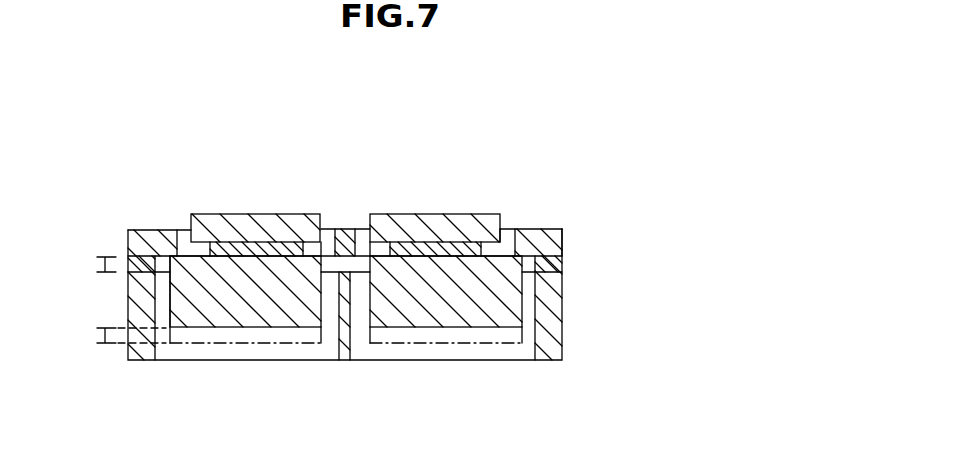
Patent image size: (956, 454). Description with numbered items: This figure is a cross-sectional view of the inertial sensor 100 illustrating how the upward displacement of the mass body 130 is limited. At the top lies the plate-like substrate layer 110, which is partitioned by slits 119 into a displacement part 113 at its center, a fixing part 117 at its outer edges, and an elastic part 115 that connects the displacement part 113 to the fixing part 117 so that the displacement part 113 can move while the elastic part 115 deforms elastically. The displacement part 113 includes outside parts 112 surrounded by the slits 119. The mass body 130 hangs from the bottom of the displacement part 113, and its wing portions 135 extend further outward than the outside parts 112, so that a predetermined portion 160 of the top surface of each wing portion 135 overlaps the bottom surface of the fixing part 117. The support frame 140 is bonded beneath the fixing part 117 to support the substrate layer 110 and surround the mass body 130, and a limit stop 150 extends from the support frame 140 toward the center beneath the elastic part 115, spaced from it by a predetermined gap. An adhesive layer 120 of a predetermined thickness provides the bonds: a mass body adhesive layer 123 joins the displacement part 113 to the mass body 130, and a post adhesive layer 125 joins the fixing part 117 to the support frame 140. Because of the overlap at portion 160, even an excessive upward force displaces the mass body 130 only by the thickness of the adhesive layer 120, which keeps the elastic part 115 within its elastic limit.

The inertial sensor 100 is at (293, 117).
The substrate layer 110 is at (570, 238).
The outside part 112 is at (443, 197).
The displacement part 113 is at (477, 226).
The elastic part 115 is at (351, 241).
The fixing part 117 is at (543, 243).
The slit 119 is at (185, 226).
The adhesive layer 120 is at (572, 263).
The mass body adhesive layer 123 is at (413, 241).
The post adhesive layer 125 is at (557, 263).
The mass body 130 is at (460, 307).
The wing portion 135 is at (346, 352).
The support frame 140 is at (543, 345).
The limit stop 150 is at (350, 345).
The predetermined portion 160 is at (172, 252).